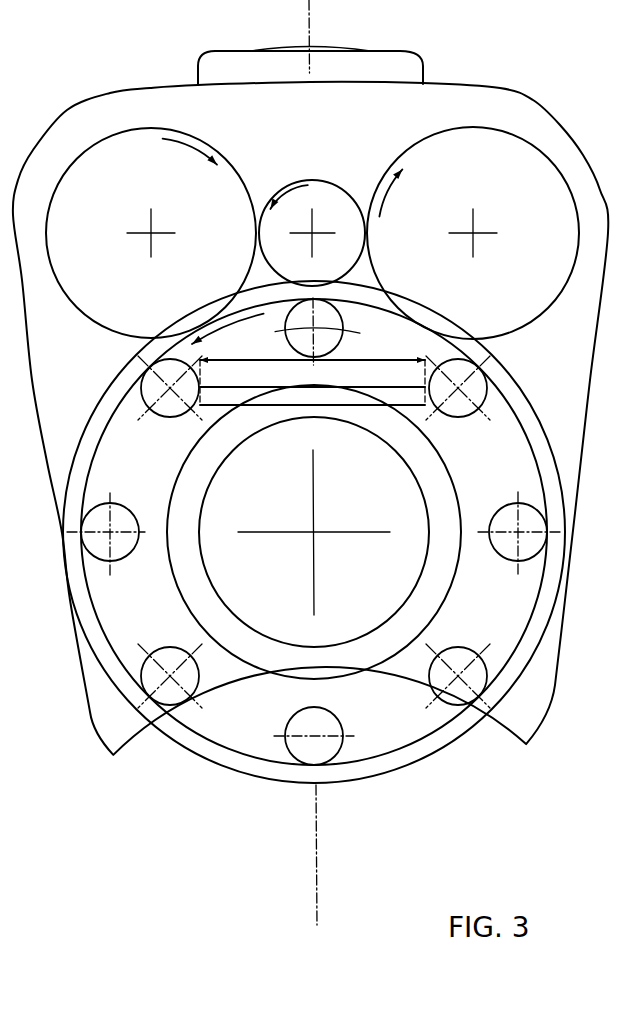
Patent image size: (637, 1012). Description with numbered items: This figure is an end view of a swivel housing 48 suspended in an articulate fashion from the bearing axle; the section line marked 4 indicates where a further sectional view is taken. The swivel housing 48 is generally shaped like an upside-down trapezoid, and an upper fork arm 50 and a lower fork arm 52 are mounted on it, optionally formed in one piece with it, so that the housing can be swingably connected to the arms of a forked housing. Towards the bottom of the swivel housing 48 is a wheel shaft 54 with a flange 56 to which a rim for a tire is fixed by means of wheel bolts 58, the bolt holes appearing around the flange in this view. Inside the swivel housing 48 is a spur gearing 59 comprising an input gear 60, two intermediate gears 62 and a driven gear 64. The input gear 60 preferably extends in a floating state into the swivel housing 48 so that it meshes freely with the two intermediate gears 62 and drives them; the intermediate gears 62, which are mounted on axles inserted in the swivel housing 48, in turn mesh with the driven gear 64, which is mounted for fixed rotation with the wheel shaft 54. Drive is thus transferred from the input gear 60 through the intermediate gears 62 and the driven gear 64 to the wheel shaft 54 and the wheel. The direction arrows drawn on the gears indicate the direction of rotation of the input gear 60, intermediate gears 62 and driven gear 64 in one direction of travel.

The section line 4- 4 is at (300, 14).
The swivel housing 48 is at (518, 85).
The upper fork arm 50 is at (222, 50).
The lower fork arm 52 is at (432, 411).
The wheel shaft 54 is at (277, 643).
The flange 56 is at (553, 592).
The wheel bolts 58 is at (130, 551).
The spur gearing 59 is at (306, 158).
The input gear 60 is at (349, 197).
The intermediate gears 62 is at (118, 134).
The driven gear 64 is at (83, 480).